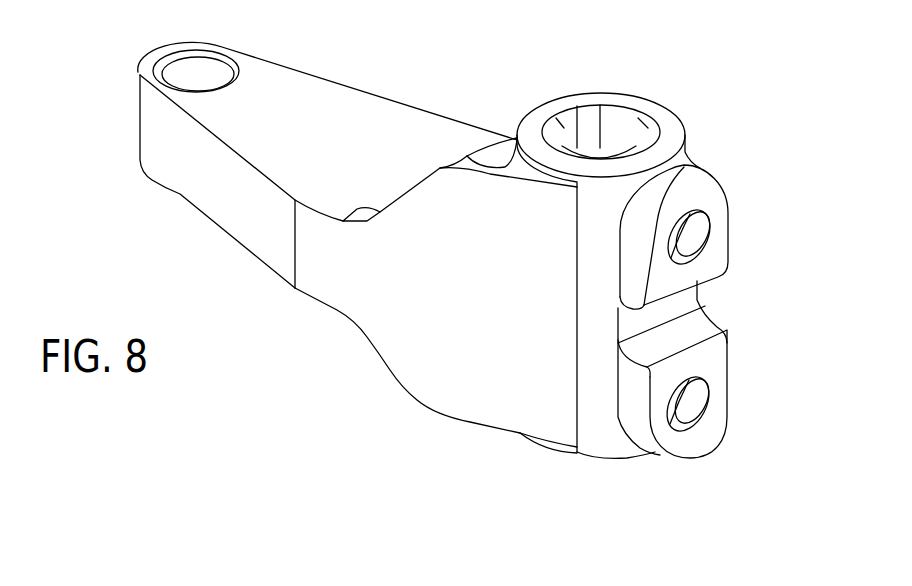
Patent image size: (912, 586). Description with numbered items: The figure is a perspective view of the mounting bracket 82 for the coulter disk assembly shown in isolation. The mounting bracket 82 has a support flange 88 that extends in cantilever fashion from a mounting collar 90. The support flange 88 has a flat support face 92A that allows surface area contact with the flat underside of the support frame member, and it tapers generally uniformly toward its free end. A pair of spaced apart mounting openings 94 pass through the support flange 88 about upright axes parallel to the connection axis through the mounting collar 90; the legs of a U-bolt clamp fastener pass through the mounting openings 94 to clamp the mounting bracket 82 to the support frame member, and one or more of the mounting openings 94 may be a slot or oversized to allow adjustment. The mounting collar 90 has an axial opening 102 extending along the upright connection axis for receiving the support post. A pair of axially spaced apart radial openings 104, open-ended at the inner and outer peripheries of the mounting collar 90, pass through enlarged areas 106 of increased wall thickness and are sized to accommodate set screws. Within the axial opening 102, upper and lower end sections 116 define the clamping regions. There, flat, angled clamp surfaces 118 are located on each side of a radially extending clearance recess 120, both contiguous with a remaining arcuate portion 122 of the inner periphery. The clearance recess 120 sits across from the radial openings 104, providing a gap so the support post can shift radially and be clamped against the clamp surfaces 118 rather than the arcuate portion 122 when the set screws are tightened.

The mounting bracket 82 is at (398, 443).
The support flange 88 is at (184, 182).
The mounting collar 90 is at (684, 142).
The flat support face 92A is at (312, 143).
The mounting openings 94 is at (200, 58).
The axial opening 102 is at (616, 122).
The radial openings 104 is at (696, 231).
The enlarged areas 106 is at (712, 262).
The upper and lower end sections 116 is at (613, 152).
The clamp surfaces 118 is at (588, 120).
The clearance recess 120 is at (560, 124).
The arcuate portion 122 is at (643, 124).